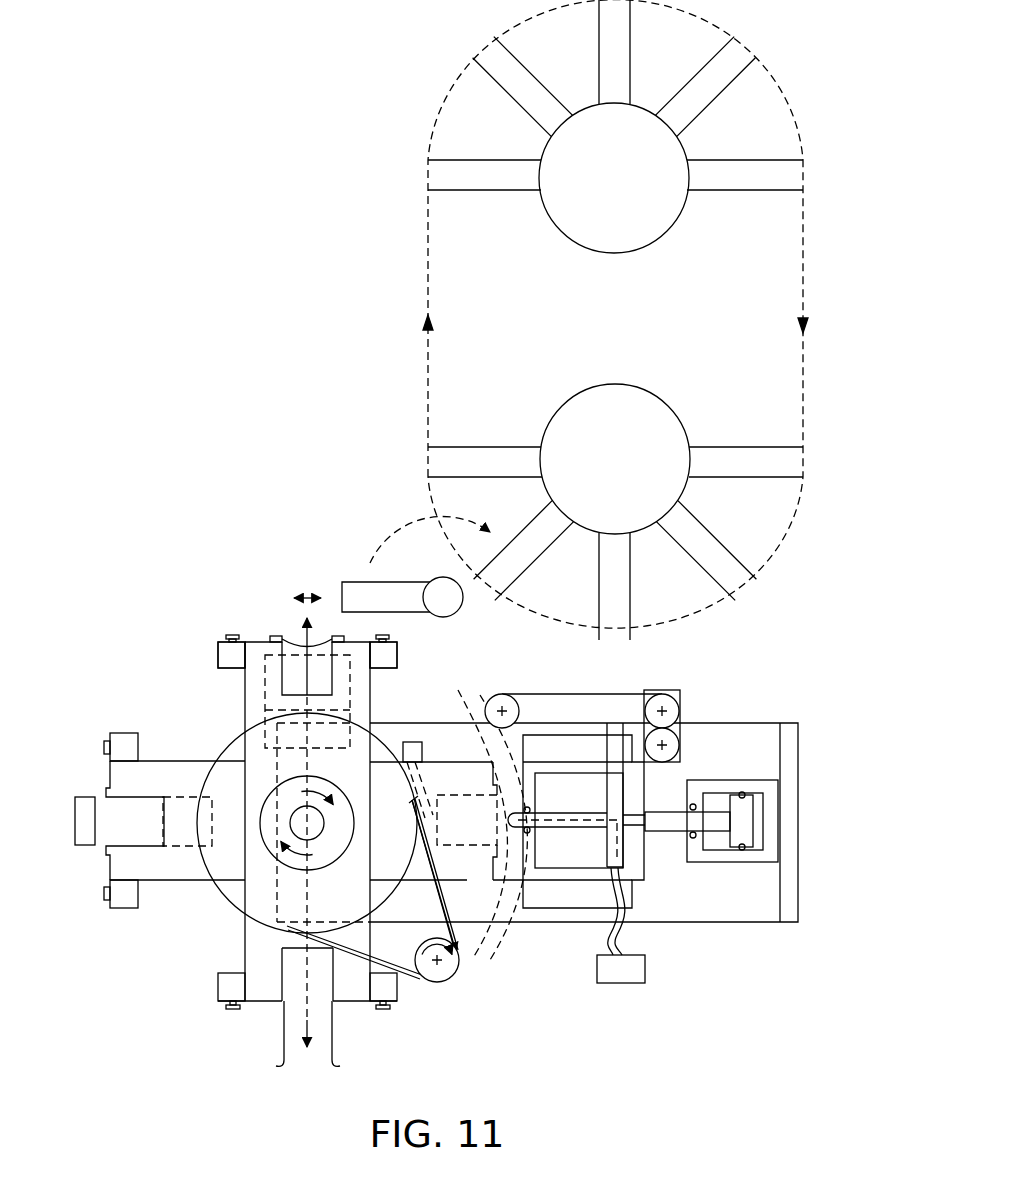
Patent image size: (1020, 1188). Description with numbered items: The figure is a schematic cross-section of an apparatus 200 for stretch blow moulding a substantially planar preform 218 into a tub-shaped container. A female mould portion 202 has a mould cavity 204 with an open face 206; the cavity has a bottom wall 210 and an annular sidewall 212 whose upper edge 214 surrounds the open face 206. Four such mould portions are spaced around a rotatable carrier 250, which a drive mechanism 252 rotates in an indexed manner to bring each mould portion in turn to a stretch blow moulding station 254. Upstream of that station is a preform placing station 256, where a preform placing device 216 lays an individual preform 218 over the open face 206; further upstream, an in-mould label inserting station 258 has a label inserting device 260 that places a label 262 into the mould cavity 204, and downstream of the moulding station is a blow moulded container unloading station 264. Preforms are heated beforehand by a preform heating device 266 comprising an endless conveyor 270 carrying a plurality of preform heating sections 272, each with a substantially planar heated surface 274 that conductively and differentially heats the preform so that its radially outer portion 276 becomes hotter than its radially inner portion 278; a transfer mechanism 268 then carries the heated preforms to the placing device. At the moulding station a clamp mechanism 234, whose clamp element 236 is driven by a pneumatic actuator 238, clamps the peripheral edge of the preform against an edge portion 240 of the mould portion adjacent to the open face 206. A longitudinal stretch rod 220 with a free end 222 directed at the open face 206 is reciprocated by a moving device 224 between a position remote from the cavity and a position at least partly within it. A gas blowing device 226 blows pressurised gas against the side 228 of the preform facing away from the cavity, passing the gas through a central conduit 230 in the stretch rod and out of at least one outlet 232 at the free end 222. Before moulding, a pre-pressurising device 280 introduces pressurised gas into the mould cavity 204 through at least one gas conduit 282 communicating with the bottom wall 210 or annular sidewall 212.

The apparatus 200 is at (285, 117).
The female mould portion 202 is at (267, 674).
The mould cavity 204 is at (293, 645).
The open face 206 is at (380, 648).
The bottom wall 210 is at (350, 693).
The annular sidewall 212 is at (270, 697).
The upper edge 214 is at (232, 648).
The preform placing device 216 is at (480, 805).
The preform 218 is at (323, 640).
The stretch rod 220 is at (580, 828).
The free end 222 is at (577, 895).
The moving device 224 is at (680, 712).
The gas blowing device 226 is at (648, 968).
The side of the placed preform 228 is at (505, 815).
The central conduit 230 is at (593, 815).
The outlet 232 is at (506, 823).
The clamp mechanism 234 is at (585, 898).
The clamp element 236 is at (548, 742).
The pneumatic actuator 238 is at (722, 862).
The edge portion 240 is at (508, 898).
The rotatable carrier 250 is at (262, 877).
The drive mechanism 252 is at (437, 982).
The stretch blow moulding station 254 is at (575, 986).
The preform placing station 256 is at (215, 572).
The in-mould label inserting station 258 is at (170, 740).
The label inserting device 260 is at (85, 845).
The label 262 is at (145, 797).
The blow moulded container unloading station 264 is at (232, 948).
The preform heating device 266 is at (423, 466).
The transfer mechanism 268 is at (447, 607).
The endless conveyor 270 is at (427, 388).
The preform heating section 272 is at (472, 452).
The heated surface 274 is at (542, 512).
The radially outer portion 276 is at (328, 640).
The radially inner portion 278 is at (291, 640).
The pre-pressurising device 280 is at (420, 743).
The gas conduit 282 is at (412, 800).